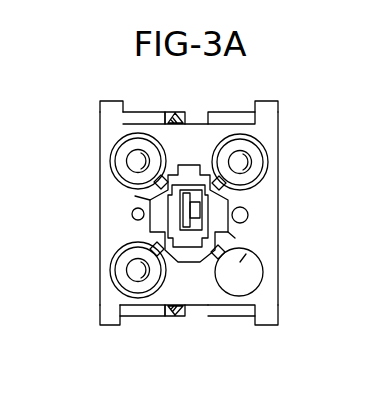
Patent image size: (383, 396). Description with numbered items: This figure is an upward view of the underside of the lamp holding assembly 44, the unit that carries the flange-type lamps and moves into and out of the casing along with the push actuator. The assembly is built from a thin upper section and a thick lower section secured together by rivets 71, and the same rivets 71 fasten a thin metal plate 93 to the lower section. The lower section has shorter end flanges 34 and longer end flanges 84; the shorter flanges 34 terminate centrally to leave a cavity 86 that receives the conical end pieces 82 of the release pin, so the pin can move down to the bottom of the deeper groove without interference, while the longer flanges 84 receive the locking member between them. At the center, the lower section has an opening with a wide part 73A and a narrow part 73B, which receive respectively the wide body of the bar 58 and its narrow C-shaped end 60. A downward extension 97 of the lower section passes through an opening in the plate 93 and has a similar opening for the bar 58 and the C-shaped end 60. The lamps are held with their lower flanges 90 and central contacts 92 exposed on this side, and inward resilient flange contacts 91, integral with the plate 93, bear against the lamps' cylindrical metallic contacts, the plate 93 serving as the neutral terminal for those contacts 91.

The lamp holding assembly 44 is at (62, 260).
The longer end flanges 84 is at (108, 108).
The shorter end flanges 34 is at (141, 112).
The conical end pieces 82 is at (182, 116).
The cavity 86 is at (197, 122).
The lower flanges 90 is at (123, 144).
The central contacts 92 is at (130, 160).
The resilient flange contacts 91 is at (152, 247).
The thin metal plate 93 is at (218, 259).
The rivets 71 is at (131, 214).
The bar 58 is at (190, 190).
The narrow C-shaped end 60 is at (190, 210).
The wide part of opening 73A is at (133, 197).
The narrow part of opening 73B is at (228, 236).
The downward extension 97 is at (245, 258).